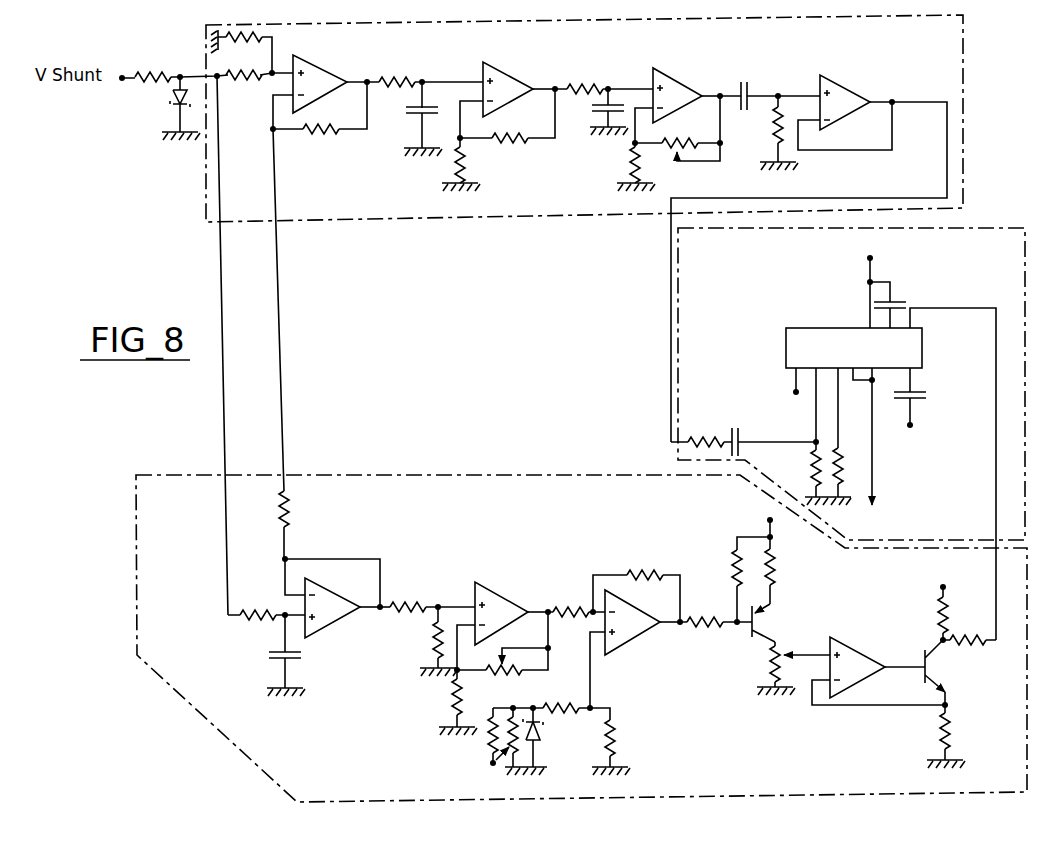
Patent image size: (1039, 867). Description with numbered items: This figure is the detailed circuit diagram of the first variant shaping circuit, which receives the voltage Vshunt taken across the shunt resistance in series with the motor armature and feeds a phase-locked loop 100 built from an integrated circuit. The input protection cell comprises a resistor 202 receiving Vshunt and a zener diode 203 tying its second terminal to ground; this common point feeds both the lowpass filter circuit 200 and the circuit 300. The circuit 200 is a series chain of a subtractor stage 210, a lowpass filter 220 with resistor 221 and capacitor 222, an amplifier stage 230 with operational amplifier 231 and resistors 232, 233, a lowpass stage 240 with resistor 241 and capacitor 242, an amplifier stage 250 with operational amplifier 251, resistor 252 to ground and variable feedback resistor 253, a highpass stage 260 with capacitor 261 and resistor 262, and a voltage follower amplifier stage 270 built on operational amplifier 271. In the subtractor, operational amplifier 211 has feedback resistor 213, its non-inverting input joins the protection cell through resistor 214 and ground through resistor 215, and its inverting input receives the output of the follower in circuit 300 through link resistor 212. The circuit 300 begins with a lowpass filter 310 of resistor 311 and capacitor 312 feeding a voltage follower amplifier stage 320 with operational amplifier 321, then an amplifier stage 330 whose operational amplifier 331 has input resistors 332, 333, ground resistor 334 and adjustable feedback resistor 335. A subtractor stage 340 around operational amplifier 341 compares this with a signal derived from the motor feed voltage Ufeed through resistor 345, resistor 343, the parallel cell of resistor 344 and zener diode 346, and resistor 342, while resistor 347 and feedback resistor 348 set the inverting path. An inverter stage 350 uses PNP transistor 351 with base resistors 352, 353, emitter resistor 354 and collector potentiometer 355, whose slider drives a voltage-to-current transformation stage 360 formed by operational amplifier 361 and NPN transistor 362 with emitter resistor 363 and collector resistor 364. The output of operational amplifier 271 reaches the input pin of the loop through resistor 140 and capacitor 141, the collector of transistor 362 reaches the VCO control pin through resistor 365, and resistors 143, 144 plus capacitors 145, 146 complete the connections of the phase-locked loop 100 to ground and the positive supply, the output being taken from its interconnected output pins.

The phase-locked loop 100 is at (678, 337).
The lowpass filter circuit 200 is at (348, 222).
The circuit 300 is at (328, 472).
The subtractor stage 210 is at (337, 70).
The lowpass filter 220 is at (418, 75).
The amplifier stage 230 is at (515, 58).
The lowpass stage 240 is at (617, 72).
The amplifier stage 250 is at (687, 73).
The highpass stage 260 is at (767, 73).
The voltage follower amplifier stage 270 is at (867, 85).
The lowpass filter 310 is at (248, 640).
The voltage follower amplifier stage 320 is at (342, 552).
The amplifier stage 330 is at (443, 577).
The subtractor stage 340 is at (655, 558).
The inverter stage 350 is at (750, 530).
The voltage-to-current transformation stage 360 is at (877, 633).
The resistor 202 is at (152, 60).
The zener diode 203 is at (161, 108).
The operational amplifier 211 is at (320, 93).
The resistor 213 is at (320, 122).
The resistor 214 is at (258, 87).
The resistor 215 is at (241, 51).
The resistor 221 is at (425, 68).
The capacitor 222 is at (410, 119).
The operational amplifier 231 is at (520, 86).
The resistor 232 is at (477, 164).
The resistor 233 is at (506, 116).
The resistor 241 is at (604, 74).
The capacitor 242 is at (593, 112).
The operational amplifier 251 is at (699, 95).
The resistor 252 is at (621, 149).
The variable resistor 253 is at (679, 128).
The capacitor 261 is at (769, 80).
The resistor 262 is at (763, 133).
The operational amplifier 271 is at (846, 98).
The resistor 140 is at (701, 428).
The capacitor 141 is at (774, 435).
The resistor 143 is at (809, 436).
The resistor 144 is at (854, 432).
The capacitor 145 is at (932, 410).
The capacitor 146 is at (902, 297).
The link resistor 212 is at (261, 526).
The resistor 311 is at (266, 600).
The capacitor 312 is at (300, 655).
The operational amplifier 321 is at (347, 617).
The operational amplifier 331 is at (513, 605).
The resistor 332 is at (432, 593).
The resistor 333 is at (427, 641).
The resistor 334 is at (444, 680).
The adjustable resistor 335 is at (504, 656).
The operational amplifier 341 is at (644, 628).
The resistor 342 is at (625, 741).
The resistor 343 is at (549, 672).
The resistor 344 is at (521, 751).
The resistor 345 is at (466, 749).
The zener diode 346 is at (552, 737).
The resistor 347 is at (575, 598).
The resistor 348 is at (636, 581).
The PNP transistor 351 is at (789, 622).
The resistor 352 is at (716, 611).
The resistor 353 is at (730, 581).
The resistor 354 is at (795, 576).
The potentiometer 355 is at (772, 668).
The operational amplifier 361 is at (877, 663).
The NPN transistor 362 is at (899, 674).
The resistor 363 is at (962, 736).
The resistor 364 is at (926, 602).
The resistor 365 is at (969, 627).